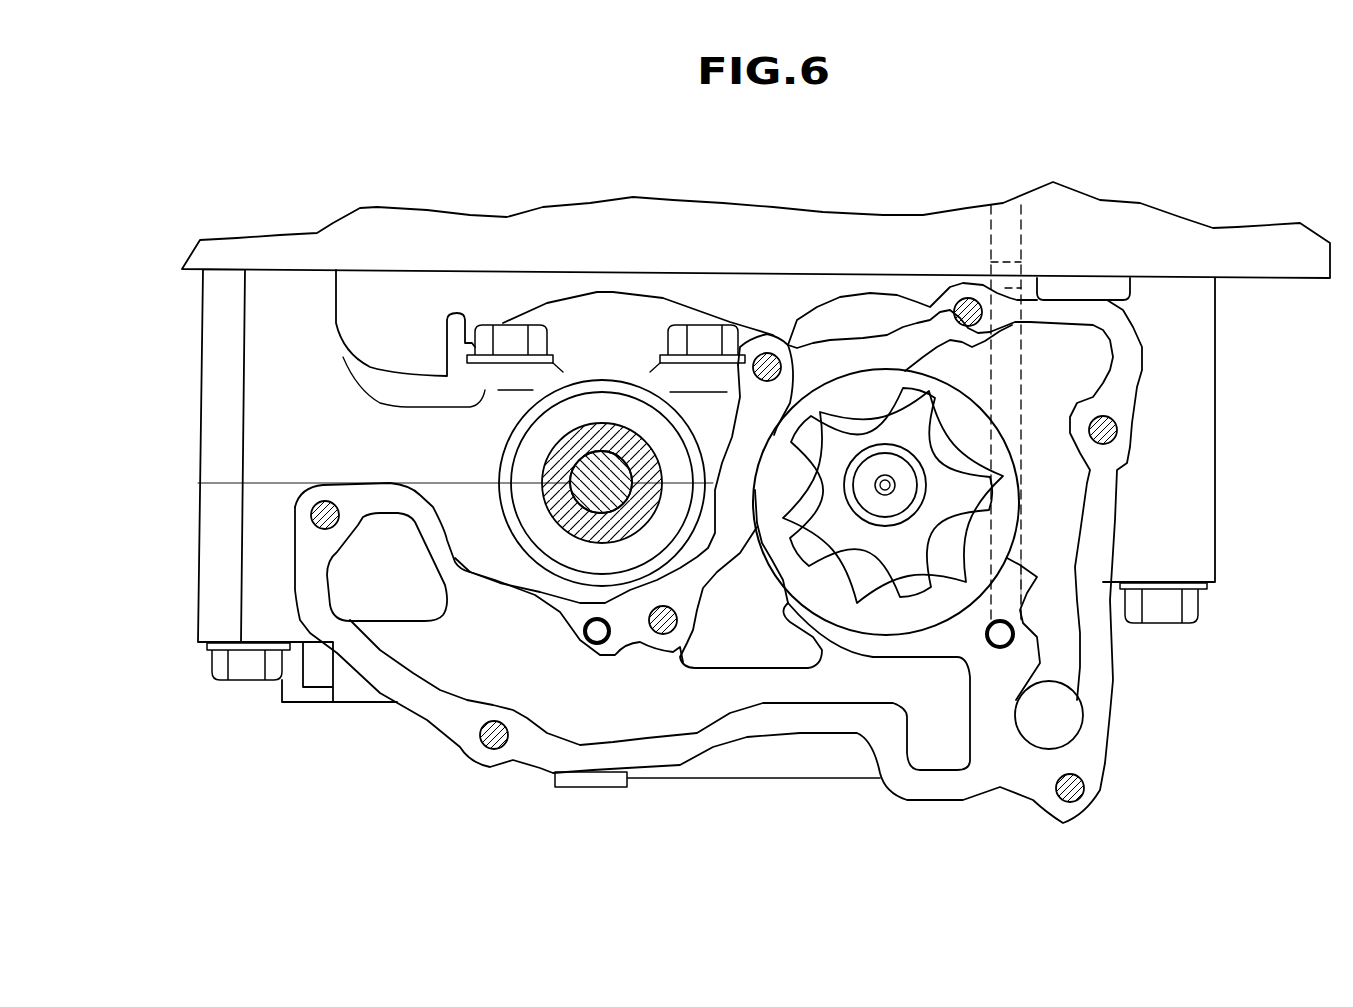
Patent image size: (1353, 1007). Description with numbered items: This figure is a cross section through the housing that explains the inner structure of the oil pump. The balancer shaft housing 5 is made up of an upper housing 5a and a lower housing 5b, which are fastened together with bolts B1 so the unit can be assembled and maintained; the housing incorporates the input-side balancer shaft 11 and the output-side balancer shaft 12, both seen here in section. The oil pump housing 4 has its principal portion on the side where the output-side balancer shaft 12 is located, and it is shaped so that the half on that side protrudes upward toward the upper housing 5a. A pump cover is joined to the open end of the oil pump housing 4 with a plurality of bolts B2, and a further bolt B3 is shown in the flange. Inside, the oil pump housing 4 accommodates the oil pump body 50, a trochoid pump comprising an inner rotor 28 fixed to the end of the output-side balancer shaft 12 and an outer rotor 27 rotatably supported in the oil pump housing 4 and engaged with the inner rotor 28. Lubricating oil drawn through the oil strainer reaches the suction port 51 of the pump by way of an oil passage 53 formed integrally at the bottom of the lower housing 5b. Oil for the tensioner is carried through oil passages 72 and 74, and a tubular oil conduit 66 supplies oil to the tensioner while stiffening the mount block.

The oil pump housing 4 is at (1125, 535).
The balancer shaft housing 5 is at (120, 430).
The upper housing 5a is at (257, 420).
The lower housing 5b is at (257, 528).
The input-side balancer shaft 11 is at (548, 476).
The output-side balancer shaft 12 is at (898, 500).
The outer rotor 27 is at (973, 423).
The inner rotor 28 is at (925, 418).
The oil pump body 50 is at (912, 483).
The suction port 51 is at (768, 640).
The oil passage 53 is at (578, 704).
The tubular oil conduit 66 is at (1003, 632).
The oil passage 72 is at (1025, 538).
The oil passage 74 is at (1003, 640).
The bolt B1 is at (247, 672).
The bolt B2 is at (325, 500).
The bolt B3 is at (968, 297).